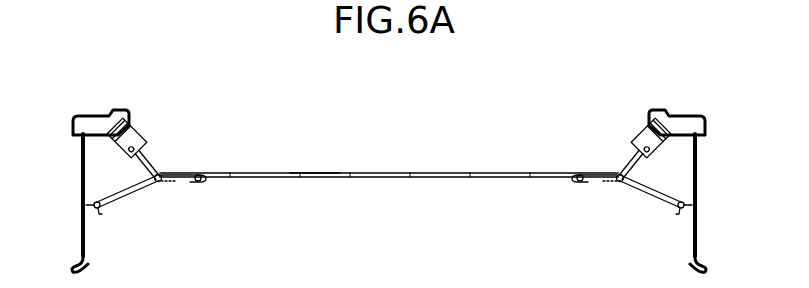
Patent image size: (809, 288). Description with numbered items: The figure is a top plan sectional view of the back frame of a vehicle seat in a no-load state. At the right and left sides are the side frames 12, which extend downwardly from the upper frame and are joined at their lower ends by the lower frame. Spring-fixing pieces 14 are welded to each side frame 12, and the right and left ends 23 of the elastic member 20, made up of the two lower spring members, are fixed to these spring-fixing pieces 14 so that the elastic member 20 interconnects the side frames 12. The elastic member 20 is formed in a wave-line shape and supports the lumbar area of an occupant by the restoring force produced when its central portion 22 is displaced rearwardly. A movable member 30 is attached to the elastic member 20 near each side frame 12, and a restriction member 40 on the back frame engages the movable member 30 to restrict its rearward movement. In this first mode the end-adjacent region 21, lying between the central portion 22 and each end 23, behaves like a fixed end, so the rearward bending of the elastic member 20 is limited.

The side frame 12 is at (83, 116).
The spring-fixing piece 14 is at (90, 195).
The elastic member 20 is at (387, 172).
The end-adjacent region 21 is at (182, 188).
The central portion 22 is at (315, 172).
The right and left ends 23 is at (96, 212).
The movable member 30 is at (148, 163).
The restriction member 40 is at (136, 140).